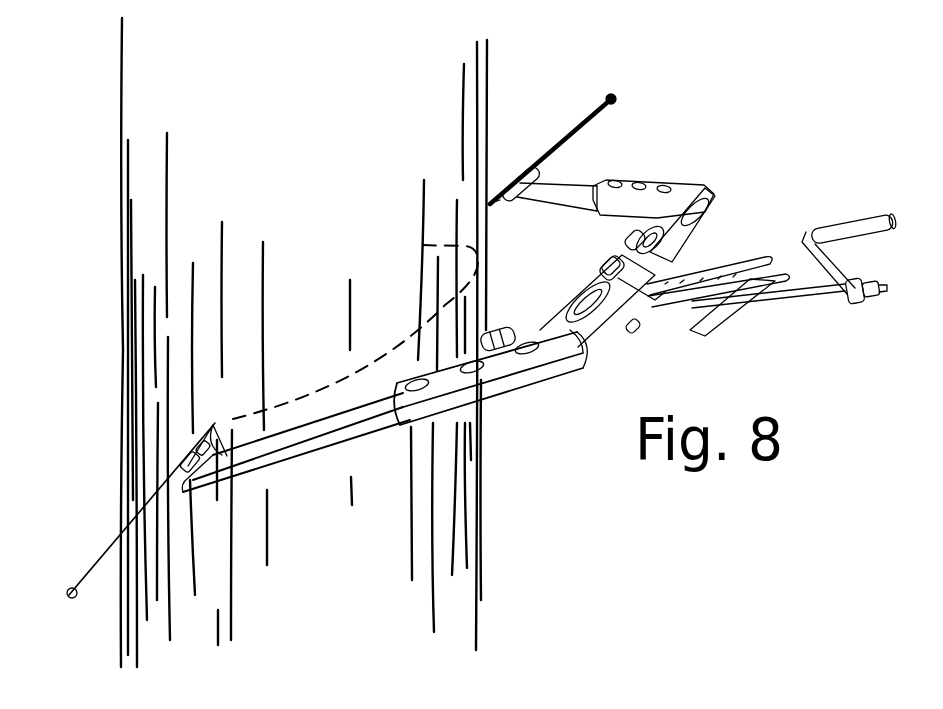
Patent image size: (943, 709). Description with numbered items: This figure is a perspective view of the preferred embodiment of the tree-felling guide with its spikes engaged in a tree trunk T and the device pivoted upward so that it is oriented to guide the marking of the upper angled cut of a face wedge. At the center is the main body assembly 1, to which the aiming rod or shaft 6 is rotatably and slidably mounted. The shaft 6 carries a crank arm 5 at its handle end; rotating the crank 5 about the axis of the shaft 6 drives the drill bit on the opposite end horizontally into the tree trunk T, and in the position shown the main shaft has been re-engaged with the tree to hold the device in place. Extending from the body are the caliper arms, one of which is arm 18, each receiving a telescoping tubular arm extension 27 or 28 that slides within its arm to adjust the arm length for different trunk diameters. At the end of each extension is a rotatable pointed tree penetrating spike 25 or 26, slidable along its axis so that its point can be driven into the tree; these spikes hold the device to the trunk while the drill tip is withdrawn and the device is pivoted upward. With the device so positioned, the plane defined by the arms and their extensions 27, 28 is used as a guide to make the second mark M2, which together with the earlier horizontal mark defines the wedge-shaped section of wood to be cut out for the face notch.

The main body assembly 1 is at (722, 258).
The crank arm 5 is at (870, 223).
The aiming rod or shaft 6 is at (790, 301).
The arm 18 is at (543, 358).
The tree penetrating spike 25 is at (558, 137).
The tree penetrating spike 26 is at (115, 540).
The tubular arm extension 27 is at (580, 193).
The tubular arm extension 28 is at (331, 437).
The second mark M2 is at (408, 336).
The tree trunk T is at (472, 566).